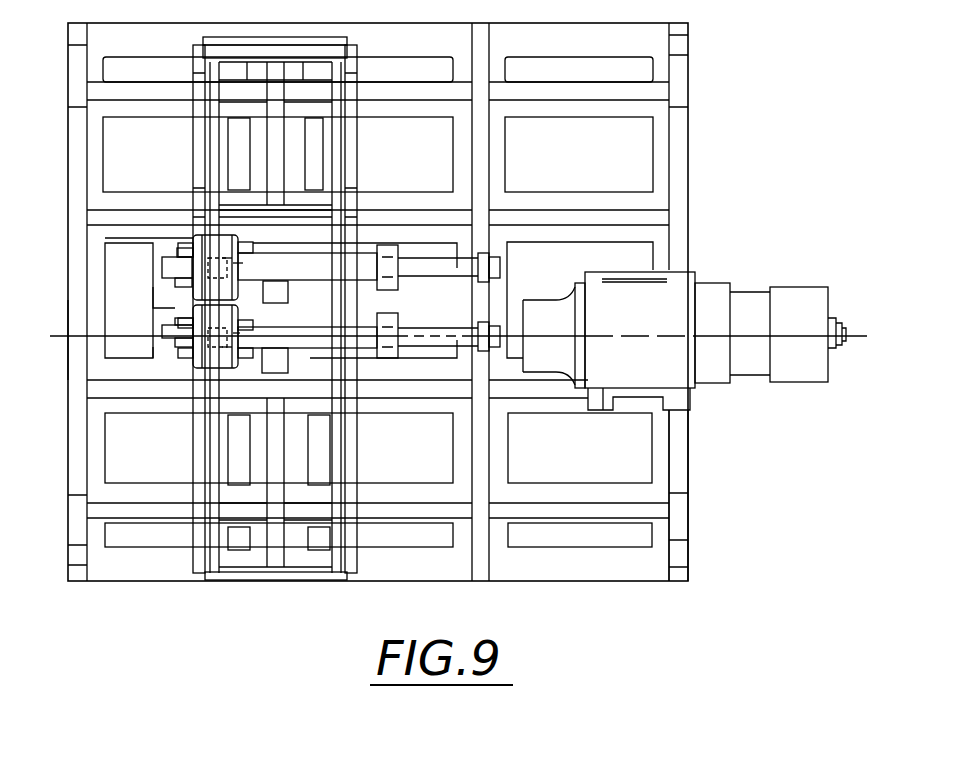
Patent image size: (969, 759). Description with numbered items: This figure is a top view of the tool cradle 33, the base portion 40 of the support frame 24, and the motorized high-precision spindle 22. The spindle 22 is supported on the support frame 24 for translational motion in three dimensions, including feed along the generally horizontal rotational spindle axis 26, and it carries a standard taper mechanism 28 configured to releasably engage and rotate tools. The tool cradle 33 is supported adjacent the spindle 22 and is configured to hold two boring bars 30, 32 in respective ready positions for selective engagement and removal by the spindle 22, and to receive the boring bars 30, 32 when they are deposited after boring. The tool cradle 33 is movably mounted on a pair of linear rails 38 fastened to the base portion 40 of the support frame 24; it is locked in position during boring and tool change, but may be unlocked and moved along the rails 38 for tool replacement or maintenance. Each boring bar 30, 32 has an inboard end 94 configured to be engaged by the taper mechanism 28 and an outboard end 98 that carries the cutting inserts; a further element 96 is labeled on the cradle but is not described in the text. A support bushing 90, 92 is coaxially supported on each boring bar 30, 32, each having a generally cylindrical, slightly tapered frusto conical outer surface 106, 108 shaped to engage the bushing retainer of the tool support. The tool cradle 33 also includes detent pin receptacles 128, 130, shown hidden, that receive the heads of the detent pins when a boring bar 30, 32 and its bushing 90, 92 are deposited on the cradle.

The spindle 22 is at (724, 280).
The support frame 24 is at (630, 573).
The rotational spindle axis 26 is at (62, 334).
The taper mechanism 28 is at (527, 302).
The boring bar 30 is at (442, 346).
The boring bar 32 is at (421, 252).
The tool cradle 33 is at (160, 280).
The linear rails 38 is at (213, 582).
The base portion 40 is at (683, 436).
The support bushing 90 is at (213, 372).
The support bushing 92 is at (203, 236).
The inboard end 94 is at (496, 253).
The lower bearing 96 is at (170, 340).
The outboard end 98 is at (170, 266).
The frusto conical outer surface 106 is at (223, 368).
The frusto conical outer surface 108 is at (232, 262).
The detent pin receptacle 128 is at (240, 332).
The detent pin receptacle 130 is at (243, 265).